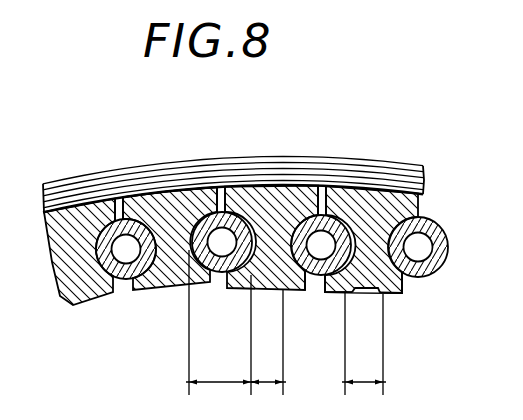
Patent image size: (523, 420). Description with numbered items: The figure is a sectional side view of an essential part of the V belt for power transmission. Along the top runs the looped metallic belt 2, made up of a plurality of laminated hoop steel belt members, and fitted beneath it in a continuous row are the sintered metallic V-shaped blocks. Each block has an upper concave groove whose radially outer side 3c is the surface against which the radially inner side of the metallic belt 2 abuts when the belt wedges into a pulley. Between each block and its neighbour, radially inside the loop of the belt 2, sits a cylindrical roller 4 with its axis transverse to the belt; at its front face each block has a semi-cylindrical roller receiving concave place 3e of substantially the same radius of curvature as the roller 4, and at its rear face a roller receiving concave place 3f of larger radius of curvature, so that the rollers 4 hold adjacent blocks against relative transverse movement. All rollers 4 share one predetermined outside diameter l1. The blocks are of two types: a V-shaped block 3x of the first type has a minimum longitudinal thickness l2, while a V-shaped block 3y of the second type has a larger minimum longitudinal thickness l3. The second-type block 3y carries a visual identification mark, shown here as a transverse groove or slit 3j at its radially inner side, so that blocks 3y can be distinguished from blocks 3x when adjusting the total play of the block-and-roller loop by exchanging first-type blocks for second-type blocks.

The metallic belt 2 is at (363, 154).
The V-shaped block of the first type 3x is at (79, 217).
The radially outer side of the concave groove 3c is at (170, 192).
The roller receiving concave place at the front 3e is at (222, 188).
The V-shaped block of the second type 3y is at (373, 212).
The roller receiving concave place at the rear 3f is at (310, 276).
The transverse groove or slit 3j is at (367, 293).
The cylindrical roller 4 is at (219, 265).
The outside diameter of the rollers l1 is at (220, 322).
The minimum longitudinal thickness of the first-type block l2 is at (268, 342).
The minimum longitudinal thickness of the second-type block l3 is at (364, 344).